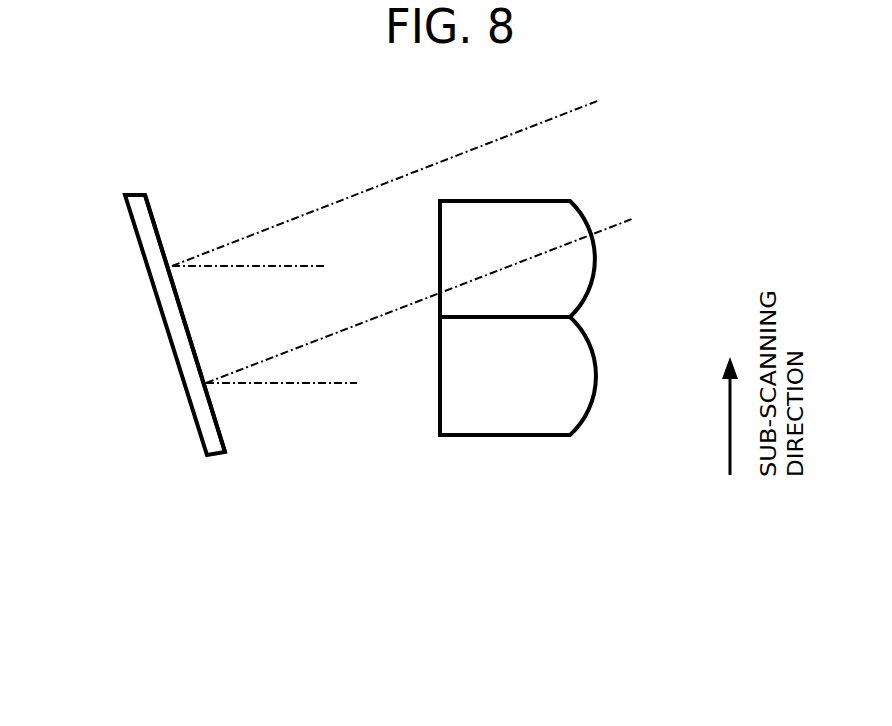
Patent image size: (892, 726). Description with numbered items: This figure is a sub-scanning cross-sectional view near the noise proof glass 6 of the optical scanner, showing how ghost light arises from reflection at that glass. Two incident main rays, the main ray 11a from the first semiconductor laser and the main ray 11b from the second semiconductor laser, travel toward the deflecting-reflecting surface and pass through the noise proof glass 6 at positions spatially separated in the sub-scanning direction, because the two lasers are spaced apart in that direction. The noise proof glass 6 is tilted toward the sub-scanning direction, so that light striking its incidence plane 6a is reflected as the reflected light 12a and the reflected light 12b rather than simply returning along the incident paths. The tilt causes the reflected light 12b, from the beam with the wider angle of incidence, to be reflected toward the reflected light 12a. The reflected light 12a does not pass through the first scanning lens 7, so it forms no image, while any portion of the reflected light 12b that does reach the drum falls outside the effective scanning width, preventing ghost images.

The noise proof glass 6 is at (117, 230).
The incidence plane 6a is at (154, 187).
The first scanning lens 7 is at (611, 274).
The main ray of incident light beam from semiconductor laser 1A 11a is at (273, 252).
The main ray of incident light beam from semiconductor laser 1B 11b is at (282, 397).
The reflected light 12a is at (339, 189).
The reflected light 12b is at (356, 340).